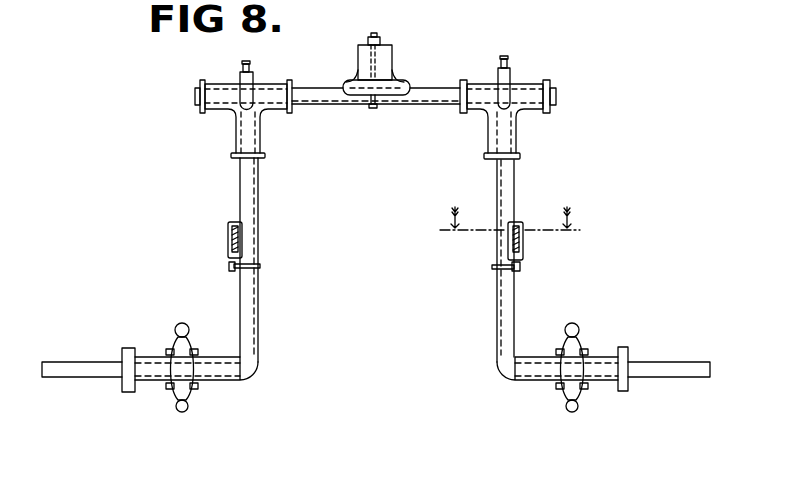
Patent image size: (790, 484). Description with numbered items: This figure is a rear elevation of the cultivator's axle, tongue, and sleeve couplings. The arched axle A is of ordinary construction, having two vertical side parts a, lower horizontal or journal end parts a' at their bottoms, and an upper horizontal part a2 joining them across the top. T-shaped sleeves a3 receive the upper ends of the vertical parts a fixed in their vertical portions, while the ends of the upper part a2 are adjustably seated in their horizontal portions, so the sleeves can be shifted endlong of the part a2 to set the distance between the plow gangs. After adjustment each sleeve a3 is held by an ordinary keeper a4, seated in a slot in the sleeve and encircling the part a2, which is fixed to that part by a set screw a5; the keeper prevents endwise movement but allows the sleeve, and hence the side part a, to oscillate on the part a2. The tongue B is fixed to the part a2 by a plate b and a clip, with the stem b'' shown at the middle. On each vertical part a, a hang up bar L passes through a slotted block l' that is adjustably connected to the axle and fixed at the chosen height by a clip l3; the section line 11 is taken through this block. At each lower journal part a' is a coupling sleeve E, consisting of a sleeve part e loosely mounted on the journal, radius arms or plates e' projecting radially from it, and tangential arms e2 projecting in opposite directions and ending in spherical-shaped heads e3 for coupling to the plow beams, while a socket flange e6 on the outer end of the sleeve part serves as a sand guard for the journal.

The arched axle A is at (376, 127).
The vertical side part of the axle a is at (377, 260).
The lower horizontal journal end part a' is at (376, 357).
The upper horizontal part of the axle a2 is at (430, 97).
The T-shaped sleeve a3 is at (262, 117).
The keeper a4 is at (255, 82).
The set screw a5 is at (245, 66).
The tongue B is at (378, 57).
The plate b is at (383, 81).
The valve stem b'' is at (360, 113).
The hang up bar L is at (370, 239).
The slotted block l' is at (368, 226).
The clip l3 is at (250, 266).
The section line 11— 11 is at (593, 238).
The sleeve part e is at (376, 380).
The radius arms or plates e' is at (375, 370).
The tangential arms e2 is at (186, 346).
The spherical-shaped head e3 is at (183, 323).
The socket flange e6 is at (125, 350).
The coupling sleeve E is at (370, 364).